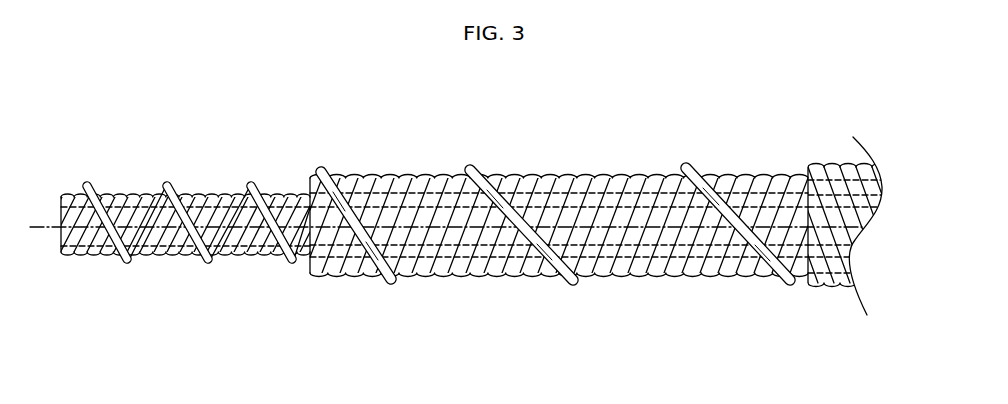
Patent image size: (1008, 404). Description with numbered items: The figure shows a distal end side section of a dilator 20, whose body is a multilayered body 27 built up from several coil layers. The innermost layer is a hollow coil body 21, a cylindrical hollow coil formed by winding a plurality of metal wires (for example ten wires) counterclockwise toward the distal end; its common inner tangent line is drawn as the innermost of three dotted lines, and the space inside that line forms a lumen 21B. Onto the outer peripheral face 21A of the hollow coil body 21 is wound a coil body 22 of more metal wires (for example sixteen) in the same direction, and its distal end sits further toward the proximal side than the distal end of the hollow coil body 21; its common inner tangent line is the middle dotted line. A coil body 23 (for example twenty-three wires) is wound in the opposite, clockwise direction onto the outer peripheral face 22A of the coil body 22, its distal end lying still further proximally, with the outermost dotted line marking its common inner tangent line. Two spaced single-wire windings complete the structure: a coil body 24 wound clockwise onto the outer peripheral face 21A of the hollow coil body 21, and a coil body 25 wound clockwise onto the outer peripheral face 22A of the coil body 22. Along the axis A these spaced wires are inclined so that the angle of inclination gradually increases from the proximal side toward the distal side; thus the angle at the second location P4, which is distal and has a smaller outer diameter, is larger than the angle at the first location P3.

The dilator 20 is at (472, 199).
The hollow coil body 21 is at (185, 226).
The outer peripheral face of the hollow coil body 21A is at (240, 253).
The lumen 21B is at (781, 235).
The coil body 22 is at (559, 230).
The outer peripheral face of the coil body 22A is at (617, 273).
The coil body 23 is at (830, 167).
The coil body 24 is at (86, 184).
The coil body 25 is at (688, 166).
The multilayered body 27 is at (775, 131).
The axis A is at (70, 232).
The first location P3 is at (354, 166).
The second location P4 is at (178, 180).